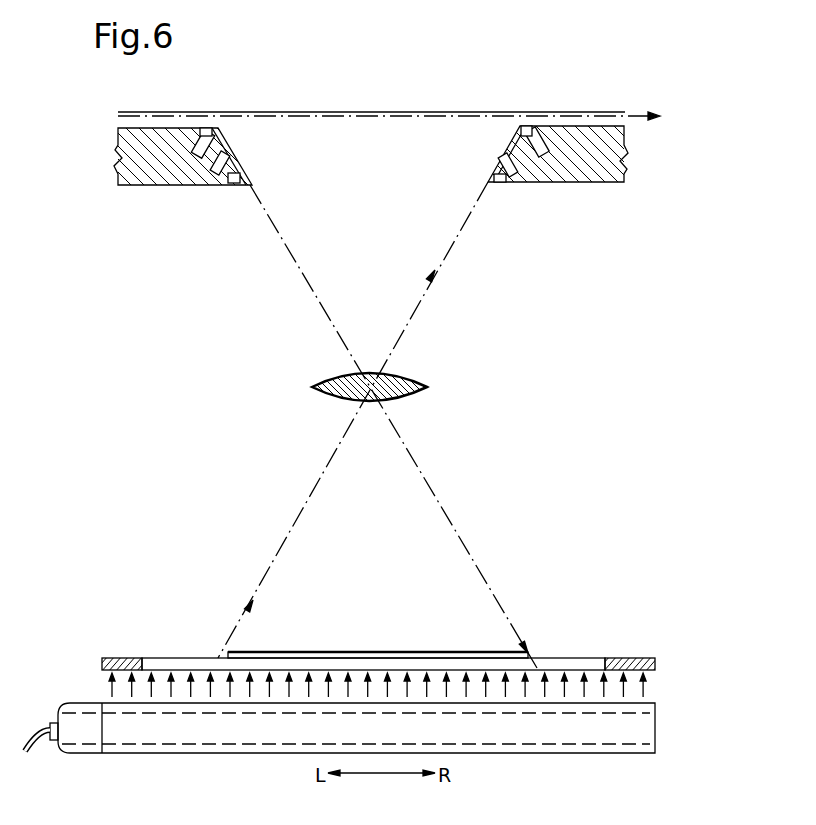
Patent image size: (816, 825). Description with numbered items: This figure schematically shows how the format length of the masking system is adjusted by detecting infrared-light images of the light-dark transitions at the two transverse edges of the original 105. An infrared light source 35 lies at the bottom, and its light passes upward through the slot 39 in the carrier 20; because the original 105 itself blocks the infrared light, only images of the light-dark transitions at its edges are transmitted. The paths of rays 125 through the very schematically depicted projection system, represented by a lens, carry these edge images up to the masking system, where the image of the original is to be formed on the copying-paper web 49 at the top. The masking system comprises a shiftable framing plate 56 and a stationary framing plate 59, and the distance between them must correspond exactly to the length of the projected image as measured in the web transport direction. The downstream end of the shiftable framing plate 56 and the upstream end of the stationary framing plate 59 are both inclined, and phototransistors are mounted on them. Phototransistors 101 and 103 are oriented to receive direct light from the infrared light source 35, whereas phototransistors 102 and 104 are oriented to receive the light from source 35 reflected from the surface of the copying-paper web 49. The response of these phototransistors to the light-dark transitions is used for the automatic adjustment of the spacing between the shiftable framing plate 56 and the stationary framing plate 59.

The copying-paper web 49 is at (581, 113).
The shiftable framing plate 56 is at (162, 183).
The stationary framing plate 59 is at (585, 178).
The phototransistor 104 is at (199, 127).
The phototransistor 103 is at (238, 185).
The phototransistor 102 is at (542, 138).
The phototransistor 101 is at (512, 180).
The rays 125 is at (400, 338).
The original 105 is at (415, 652).
The slot 39 is at (545, 657).
The carrier 20 is at (606, 657).
The infrared light source 35 is at (582, 740).